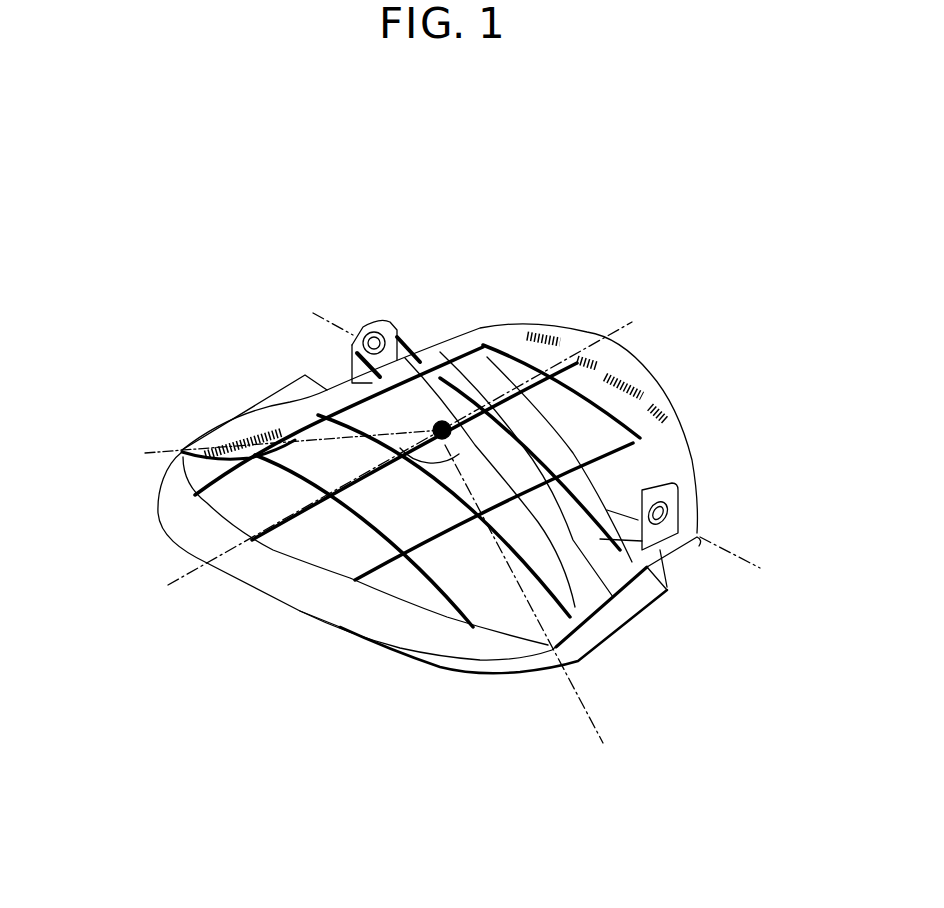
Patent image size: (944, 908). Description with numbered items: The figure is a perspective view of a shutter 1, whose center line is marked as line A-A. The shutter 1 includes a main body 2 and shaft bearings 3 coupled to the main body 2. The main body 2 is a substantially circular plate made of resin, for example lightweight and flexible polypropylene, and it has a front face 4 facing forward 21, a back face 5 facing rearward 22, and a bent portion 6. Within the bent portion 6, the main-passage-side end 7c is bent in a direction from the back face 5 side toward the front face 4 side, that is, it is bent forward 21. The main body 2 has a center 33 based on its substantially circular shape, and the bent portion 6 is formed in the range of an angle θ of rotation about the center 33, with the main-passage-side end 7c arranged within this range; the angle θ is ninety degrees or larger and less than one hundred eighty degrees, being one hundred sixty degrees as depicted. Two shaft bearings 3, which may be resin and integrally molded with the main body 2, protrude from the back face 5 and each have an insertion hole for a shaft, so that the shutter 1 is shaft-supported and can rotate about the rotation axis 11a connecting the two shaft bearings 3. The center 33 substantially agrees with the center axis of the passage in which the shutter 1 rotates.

The shutter 1 is at (246, 225).
The main body 2 is at (553, 613).
The shaft bearing 3 is at (660, 483).
The front face 4 is at (523, 663).
The back face 5 is at (257, 420).
The bent portion 6 is at (408, 635).
The main-passage-side end 7c is at (223, 573).
The rotation axis 11a is at (745, 552).
The forward 21 is at (456, 838).
The rearward 22 is at (456, 200).
The center 33 is at (437, 428).